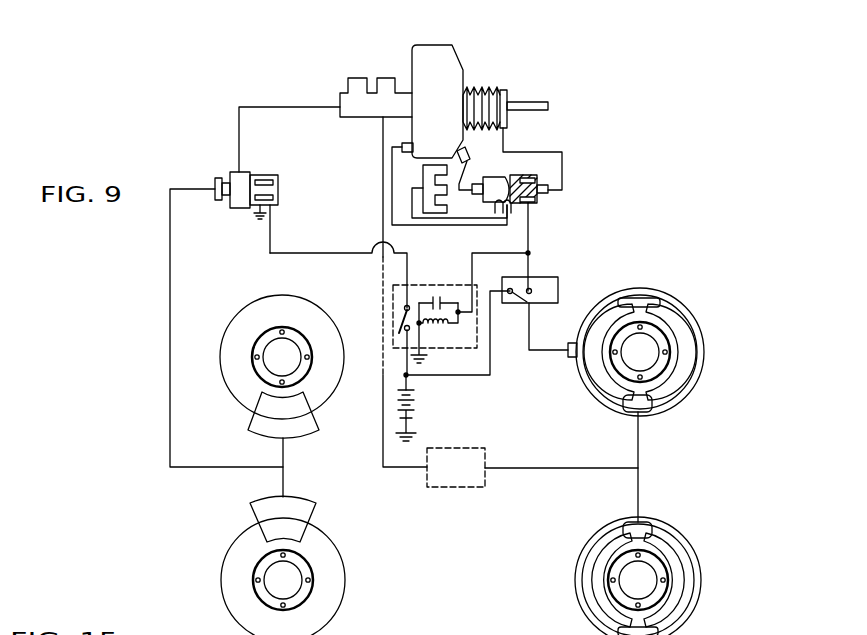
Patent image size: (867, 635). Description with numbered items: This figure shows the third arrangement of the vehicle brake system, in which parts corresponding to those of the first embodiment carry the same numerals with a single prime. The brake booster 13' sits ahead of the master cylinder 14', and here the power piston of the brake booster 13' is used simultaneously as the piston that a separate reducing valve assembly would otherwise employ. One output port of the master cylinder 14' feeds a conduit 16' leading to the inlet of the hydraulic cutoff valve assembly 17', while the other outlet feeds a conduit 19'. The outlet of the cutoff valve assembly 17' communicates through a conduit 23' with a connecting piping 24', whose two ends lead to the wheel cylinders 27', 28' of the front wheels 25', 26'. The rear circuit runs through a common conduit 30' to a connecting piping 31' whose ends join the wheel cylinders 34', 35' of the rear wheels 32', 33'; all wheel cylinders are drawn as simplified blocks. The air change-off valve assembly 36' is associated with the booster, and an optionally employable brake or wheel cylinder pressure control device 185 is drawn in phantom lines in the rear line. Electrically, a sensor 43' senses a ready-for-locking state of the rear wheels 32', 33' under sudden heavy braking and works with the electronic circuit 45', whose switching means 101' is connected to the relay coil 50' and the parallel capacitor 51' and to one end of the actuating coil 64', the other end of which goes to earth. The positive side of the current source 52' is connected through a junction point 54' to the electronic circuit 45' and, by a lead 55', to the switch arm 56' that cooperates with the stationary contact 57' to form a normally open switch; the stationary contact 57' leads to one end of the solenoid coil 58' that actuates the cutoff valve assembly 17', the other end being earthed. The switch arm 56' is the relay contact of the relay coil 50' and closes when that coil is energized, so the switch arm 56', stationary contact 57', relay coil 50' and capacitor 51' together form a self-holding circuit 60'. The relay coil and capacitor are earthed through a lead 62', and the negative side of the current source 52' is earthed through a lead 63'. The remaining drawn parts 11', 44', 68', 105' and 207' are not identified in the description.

The push rod 11' is at (534, 126).
The brake booster 13' is at (453, 95).
The master cylinder 14' is at (367, 79).
The conduit 16' is at (289, 120).
The hydraulic cutoff valve assembly 17' is at (223, 171).
The conduit 19' is at (387, 292).
The conduit 23' is at (226, 328).
The connecting piping 24' is at (309, 467).
The front wheel 25' is at (265, 357).
The front wheel 26' is at (259, 576).
The wheel cylinder 27' is at (265, 427).
The wheel cylinder 28' is at (262, 519).
The common conduit 30' is at (561, 487).
The connecting piping 31' is at (663, 467).
The rear wheel 32' is at (651, 356).
The rear wheel 33' is at (649, 568).
The wheel cylinder 34' is at (624, 421).
The wheel cylinder 35' is at (623, 511).
The air change-off valve assembly 36' is at (485, 180).
The sensor 43' is at (559, 367).
The conductor 44' is at (553, 326).
The electronic circuit 45' is at (548, 275).
The relay coil 50' is at (472, 302).
The capacitor 51' is at (441, 283).
The current source 52' is at (382, 404).
The junction point 54' is at (433, 389).
The lead 55' is at (430, 340).
The switch arm 56' is at (380, 317).
The stationary contact 57' is at (381, 351).
The solenoid coil 58' is at (279, 197).
The self-holding circuit 60' is at (373, 295).
The lead 62' is at (440, 338).
The lead 63' is at (428, 427).
The actuating coil 64' is at (546, 233).
The bellows 68' is at (498, 89).
The switching means 101' is at (519, 311).
The bracket 105' is at (423, 191).
The brake or wheel cylinder pressure control device 185 is at (463, 480).
The vacuum line 207' is at (449, 200).